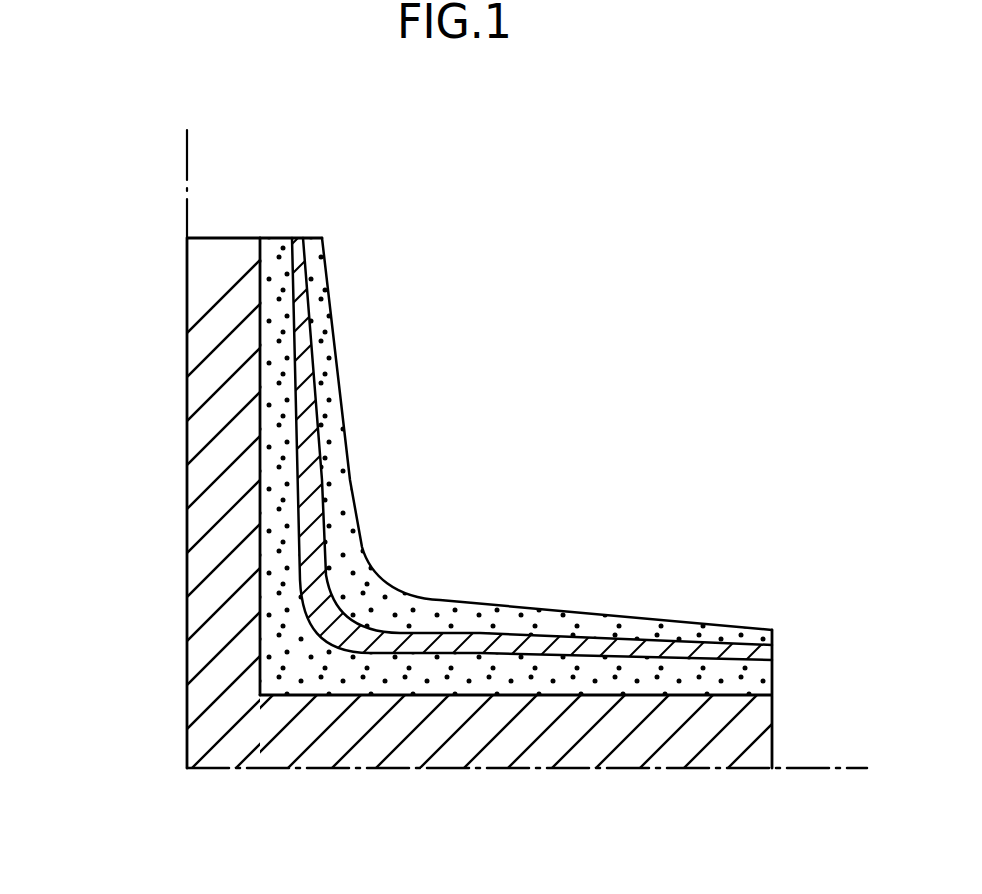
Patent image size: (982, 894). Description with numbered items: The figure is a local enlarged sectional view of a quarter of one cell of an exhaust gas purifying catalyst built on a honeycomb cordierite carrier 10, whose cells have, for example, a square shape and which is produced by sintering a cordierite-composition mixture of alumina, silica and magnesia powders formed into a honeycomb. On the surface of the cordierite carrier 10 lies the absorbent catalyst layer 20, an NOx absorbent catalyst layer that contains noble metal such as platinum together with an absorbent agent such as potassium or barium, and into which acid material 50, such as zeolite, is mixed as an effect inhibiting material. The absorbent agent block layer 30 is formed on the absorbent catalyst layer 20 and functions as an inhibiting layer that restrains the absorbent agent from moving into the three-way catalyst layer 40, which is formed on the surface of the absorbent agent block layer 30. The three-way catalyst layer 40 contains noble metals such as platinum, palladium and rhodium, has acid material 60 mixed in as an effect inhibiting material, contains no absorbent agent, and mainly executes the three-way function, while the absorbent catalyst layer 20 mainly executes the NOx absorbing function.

The cordierite carrier 10 is at (538, 752).
The absorbent catalyst layer 20 is at (262, 604).
The absorbent agent block layer 30 is at (300, 400).
The three-way catalyst layer 40 is at (682, 632).
The acid material 50 is at (266, 444).
The acid material 60 is at (597, 623).